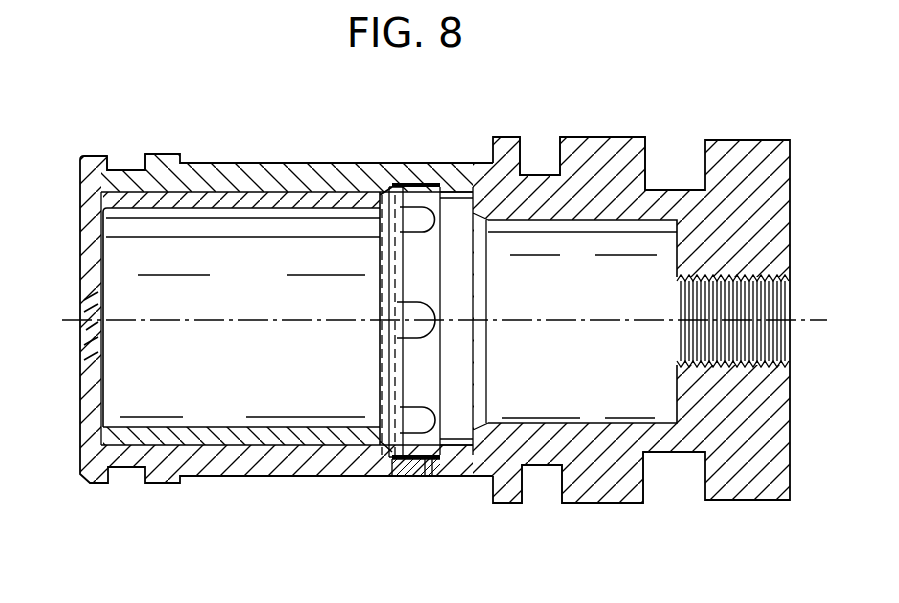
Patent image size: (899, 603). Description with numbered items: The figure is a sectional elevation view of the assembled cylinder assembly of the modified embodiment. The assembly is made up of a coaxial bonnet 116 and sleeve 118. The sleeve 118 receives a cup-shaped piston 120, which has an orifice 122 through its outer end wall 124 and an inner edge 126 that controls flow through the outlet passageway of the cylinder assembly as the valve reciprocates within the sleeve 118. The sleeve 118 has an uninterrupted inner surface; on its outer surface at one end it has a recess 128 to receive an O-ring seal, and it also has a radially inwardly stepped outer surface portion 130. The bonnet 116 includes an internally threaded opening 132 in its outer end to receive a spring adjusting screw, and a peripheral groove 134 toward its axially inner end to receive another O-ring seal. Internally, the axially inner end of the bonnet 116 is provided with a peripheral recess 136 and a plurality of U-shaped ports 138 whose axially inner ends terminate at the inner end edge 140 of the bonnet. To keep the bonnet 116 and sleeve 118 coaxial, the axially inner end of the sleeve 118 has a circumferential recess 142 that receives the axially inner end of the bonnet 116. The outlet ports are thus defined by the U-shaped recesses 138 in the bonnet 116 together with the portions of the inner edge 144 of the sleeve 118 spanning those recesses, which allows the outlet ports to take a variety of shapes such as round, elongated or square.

The bonnet 116 is at (756, 138).
The sleeve 118 is at (294, 162).
The cup-shaped piston 120 is at (78, 228).
The orifice 122 is at (83, 328).
The outer end wall 124 is at (83, 390).
The inner edge 126 is at (418, 468).
The recess 128 is at (125, 167).
The radially inwardly stepped outer surface portion 130 is at (255, 477).
The internally threaded opening 132 is at (783, 303).
The peripheral groove 134 is at (543, 175).
The peripheral recess 136 is at (445, 186).
The U-shaped ports 138 is at (430, 180).
The inner end edge 140 is at (382, 366).
The circumferential recess 142 is at (387, 167).
The inner edge 144 is at (408, 182).